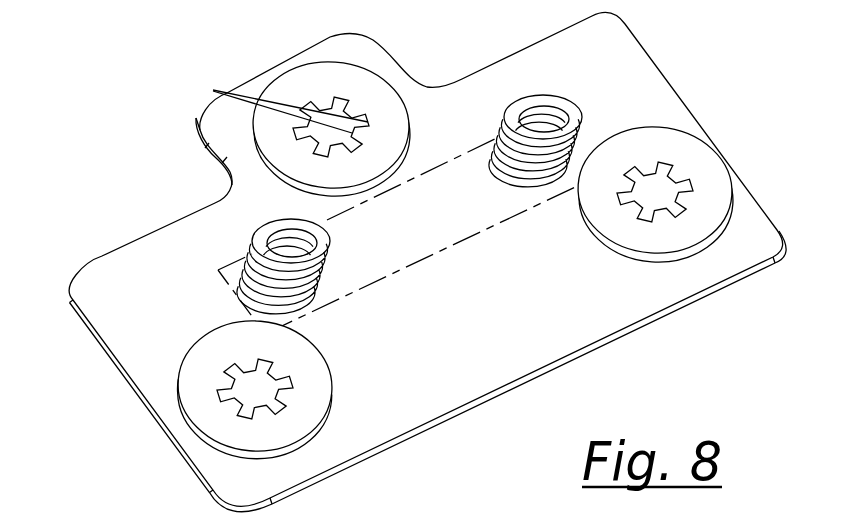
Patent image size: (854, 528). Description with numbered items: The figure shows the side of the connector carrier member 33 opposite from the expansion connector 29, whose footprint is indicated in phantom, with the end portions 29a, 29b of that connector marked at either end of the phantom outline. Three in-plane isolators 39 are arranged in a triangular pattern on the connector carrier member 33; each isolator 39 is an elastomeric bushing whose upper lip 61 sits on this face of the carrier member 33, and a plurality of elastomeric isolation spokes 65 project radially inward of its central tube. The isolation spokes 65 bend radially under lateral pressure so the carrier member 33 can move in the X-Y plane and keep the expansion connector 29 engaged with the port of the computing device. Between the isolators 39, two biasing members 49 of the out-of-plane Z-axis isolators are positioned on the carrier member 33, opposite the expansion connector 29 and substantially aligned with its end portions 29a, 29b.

The expansion connector 29 is at (458, 157).
The end portion of expansion connector 29a is at (237, 298).
The end portion of expansion connector 29b is at (587, 141).
The connector carrier member 33 is at (485, 318).
The in-plane isolator 39 is at (302, 83).
The biasing member 49 is at (257, 240).
The upper lip 61 is at (190, 419).
The isolation spoke 65 is at (213, 90).